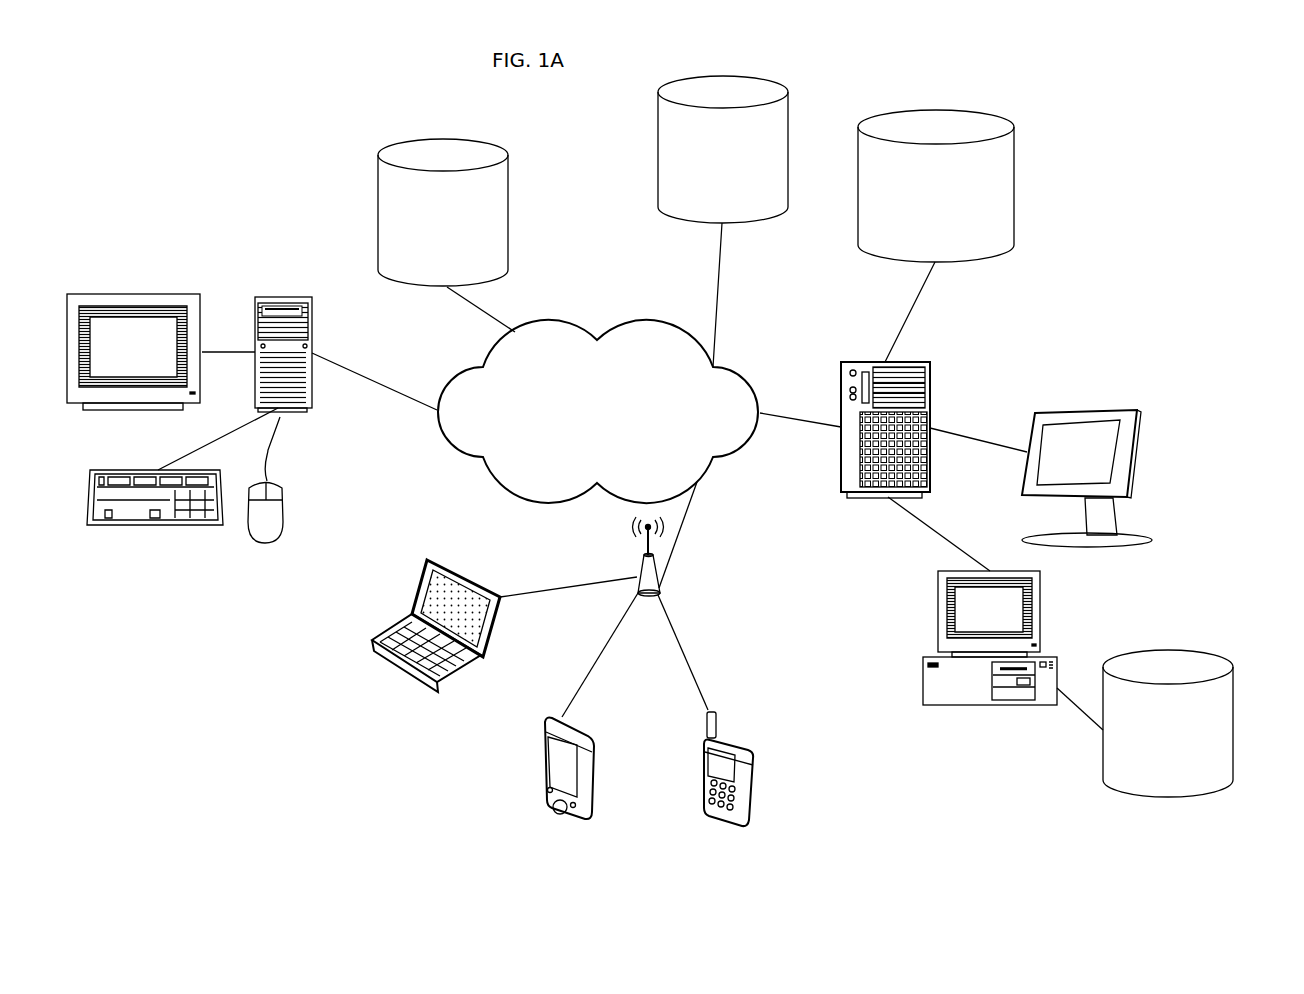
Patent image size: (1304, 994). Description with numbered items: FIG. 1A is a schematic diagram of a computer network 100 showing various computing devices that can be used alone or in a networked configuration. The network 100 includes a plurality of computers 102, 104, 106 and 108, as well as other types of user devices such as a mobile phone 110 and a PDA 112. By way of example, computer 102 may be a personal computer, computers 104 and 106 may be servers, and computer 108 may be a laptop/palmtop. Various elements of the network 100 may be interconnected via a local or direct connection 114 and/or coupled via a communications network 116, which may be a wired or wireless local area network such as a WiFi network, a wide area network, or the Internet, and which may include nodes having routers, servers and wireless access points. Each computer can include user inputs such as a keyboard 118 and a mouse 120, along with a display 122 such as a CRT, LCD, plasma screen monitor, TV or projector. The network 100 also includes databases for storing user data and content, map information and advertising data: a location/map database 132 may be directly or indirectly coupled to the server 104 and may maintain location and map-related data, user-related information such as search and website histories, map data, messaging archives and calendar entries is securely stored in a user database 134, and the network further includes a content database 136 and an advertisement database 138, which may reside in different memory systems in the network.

The computer network 100 is at (519, 105).
The computer 102 is at (291, 296).
The computer 104 is at (840, 377).
The computer 106 is at (922, 665).
The computer 108 is at (370, 640).
The mobile phone 110 is at (757, 775).
The PDA 112 is at (542, 793).
The local or direct connection 114 is at (927, 532).
The communications network 116 is at (557, 320).
The keyboard 118 is at (155, 526).
The mouse 120 is at (285, 500).
The display 122 is at (124, 292).
The location/map database 132 is at (1013, 142).
The user database 134 is at (511, 220).
The content database 136 is at (1237, 730).
The advertisement database 138 is at (791, 155).